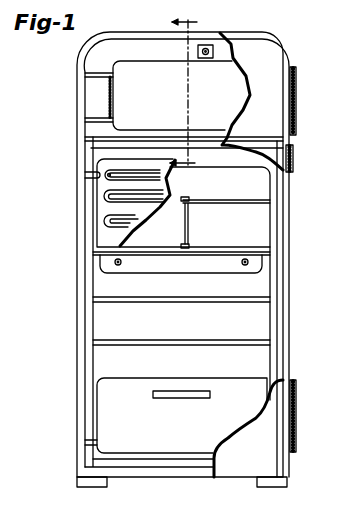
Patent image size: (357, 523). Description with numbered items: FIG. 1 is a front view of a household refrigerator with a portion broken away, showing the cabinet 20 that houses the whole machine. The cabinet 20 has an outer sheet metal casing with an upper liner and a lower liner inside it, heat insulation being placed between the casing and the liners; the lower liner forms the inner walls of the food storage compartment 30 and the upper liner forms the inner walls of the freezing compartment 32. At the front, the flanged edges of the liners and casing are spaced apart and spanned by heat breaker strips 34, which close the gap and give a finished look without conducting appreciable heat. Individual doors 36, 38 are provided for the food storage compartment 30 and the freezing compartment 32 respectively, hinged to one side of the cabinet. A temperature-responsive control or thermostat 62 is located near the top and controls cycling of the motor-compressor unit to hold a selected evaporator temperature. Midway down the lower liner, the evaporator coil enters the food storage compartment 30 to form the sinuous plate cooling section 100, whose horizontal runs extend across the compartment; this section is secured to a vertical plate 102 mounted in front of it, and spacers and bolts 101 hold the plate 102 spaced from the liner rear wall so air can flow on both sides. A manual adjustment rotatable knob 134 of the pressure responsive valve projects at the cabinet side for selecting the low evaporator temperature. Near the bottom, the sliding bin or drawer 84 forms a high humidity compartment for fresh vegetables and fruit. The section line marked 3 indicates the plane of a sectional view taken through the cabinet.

The cabinet 20 is at (301, 50).
The food storage compartment 30 is at (190, 325).
The freezing compartment 32 is at (168, 89).
The heat breaker strips 34 is at (138, 52).
The door 36 is at (281, 98).
The door 38 is at (293, 153).
The temperature-responsive control 62 is at (223, 33).
The sliding bin or drawer 84 is at (223, 380).
The plate cooling section 100 is at (142, 207).
The spacers and bolts 101 is at (120, 266).
The plate 102 is at (255, 219).
The manual adjustment rotatable knob 134 is at (97, 185).
The section line 3- 3 is at (183, 94).